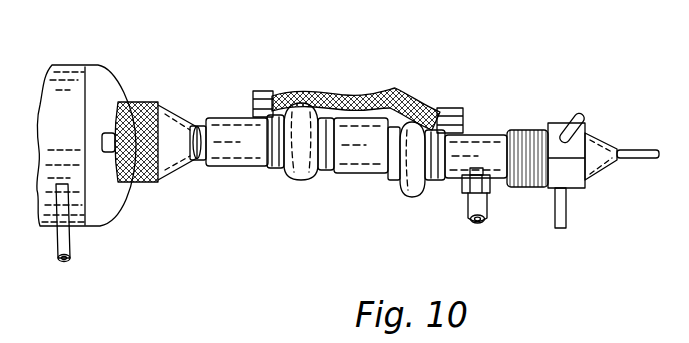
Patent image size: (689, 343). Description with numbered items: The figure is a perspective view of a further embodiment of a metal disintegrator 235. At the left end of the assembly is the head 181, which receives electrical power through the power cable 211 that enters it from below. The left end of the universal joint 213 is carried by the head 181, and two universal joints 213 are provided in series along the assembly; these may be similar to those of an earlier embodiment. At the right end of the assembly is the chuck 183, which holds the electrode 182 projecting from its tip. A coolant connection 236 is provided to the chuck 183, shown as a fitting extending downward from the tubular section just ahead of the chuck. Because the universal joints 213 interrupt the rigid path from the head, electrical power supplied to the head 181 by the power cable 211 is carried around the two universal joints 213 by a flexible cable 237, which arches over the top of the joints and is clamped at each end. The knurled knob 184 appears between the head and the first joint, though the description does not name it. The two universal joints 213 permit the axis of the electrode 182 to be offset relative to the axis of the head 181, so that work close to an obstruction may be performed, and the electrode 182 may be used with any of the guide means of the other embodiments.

The head 181 is at (82, 72).
The electrode 182 is at (637, 160).
The chuck 183 is at (592, 135).
The knurled knob 184 is at (148, 103).
The power cable 211 is at (73, 243).
The universal joints 213 is at (395, 195).
The metal disintegrator 235 is at (260, 193).
The coolant connection 236 is at (490, 213).
The flexible cable 237 is at (380, 93).